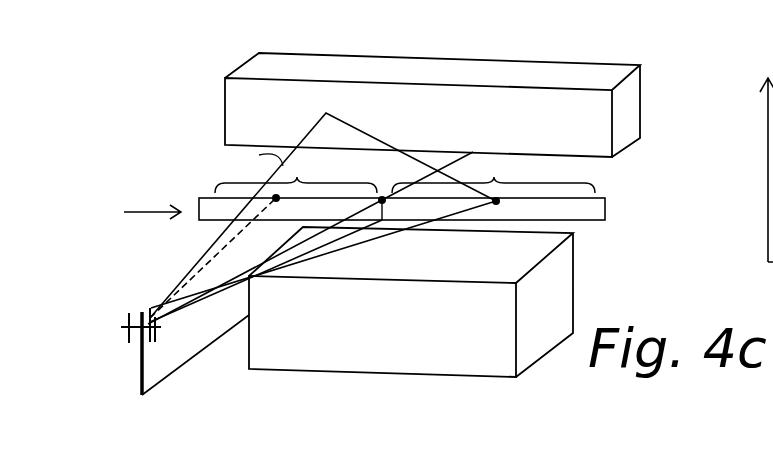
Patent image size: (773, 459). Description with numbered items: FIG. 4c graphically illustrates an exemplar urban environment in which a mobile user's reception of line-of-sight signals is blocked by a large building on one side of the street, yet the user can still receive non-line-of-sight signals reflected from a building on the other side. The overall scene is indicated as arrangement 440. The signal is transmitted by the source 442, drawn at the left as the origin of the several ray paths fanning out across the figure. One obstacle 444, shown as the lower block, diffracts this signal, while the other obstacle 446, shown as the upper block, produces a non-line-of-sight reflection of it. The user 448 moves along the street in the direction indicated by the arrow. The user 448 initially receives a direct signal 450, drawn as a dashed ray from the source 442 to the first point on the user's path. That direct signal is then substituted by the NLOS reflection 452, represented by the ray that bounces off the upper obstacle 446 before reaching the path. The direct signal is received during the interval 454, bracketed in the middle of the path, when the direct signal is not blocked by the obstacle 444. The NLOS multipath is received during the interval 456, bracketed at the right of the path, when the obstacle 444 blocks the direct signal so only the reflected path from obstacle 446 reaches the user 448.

The display system 440 is at (622, 264).
The source 442 is at (173, 351).
The obstacle 444 is at (373, 373).
The obstacle 446 is at (247, 65).
The user 448 is at (150, 188).
The direct signal 450 is at (212, 258).
The NLOS reflection 452 is at (395, 174).
The interval 454 is at (310, 238).
The interval 456 is at (372, 215).